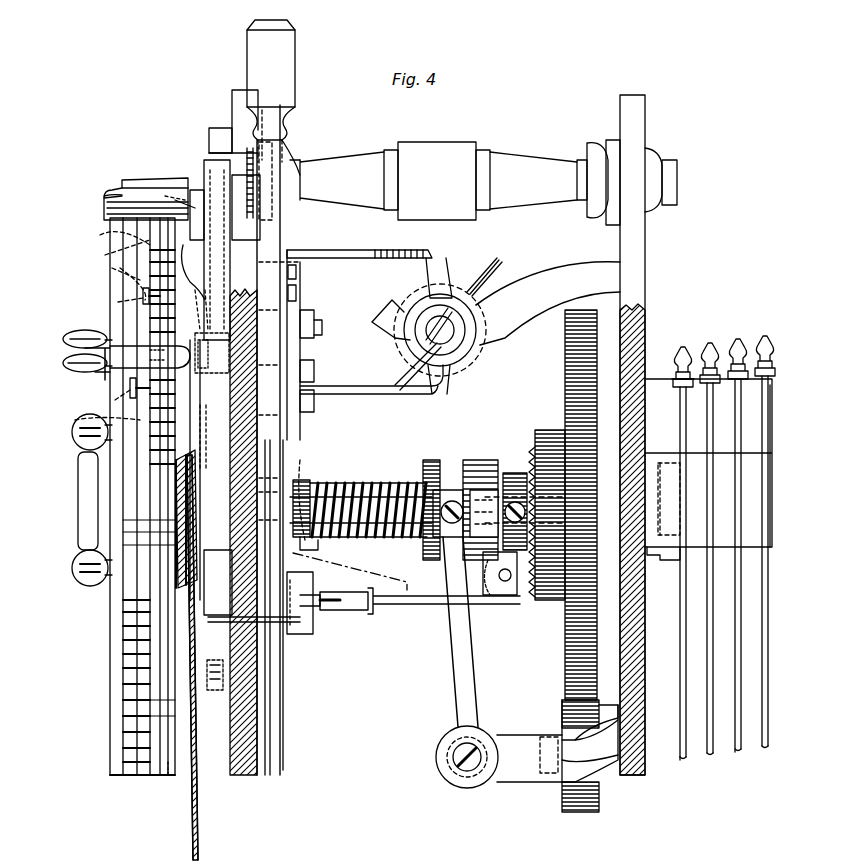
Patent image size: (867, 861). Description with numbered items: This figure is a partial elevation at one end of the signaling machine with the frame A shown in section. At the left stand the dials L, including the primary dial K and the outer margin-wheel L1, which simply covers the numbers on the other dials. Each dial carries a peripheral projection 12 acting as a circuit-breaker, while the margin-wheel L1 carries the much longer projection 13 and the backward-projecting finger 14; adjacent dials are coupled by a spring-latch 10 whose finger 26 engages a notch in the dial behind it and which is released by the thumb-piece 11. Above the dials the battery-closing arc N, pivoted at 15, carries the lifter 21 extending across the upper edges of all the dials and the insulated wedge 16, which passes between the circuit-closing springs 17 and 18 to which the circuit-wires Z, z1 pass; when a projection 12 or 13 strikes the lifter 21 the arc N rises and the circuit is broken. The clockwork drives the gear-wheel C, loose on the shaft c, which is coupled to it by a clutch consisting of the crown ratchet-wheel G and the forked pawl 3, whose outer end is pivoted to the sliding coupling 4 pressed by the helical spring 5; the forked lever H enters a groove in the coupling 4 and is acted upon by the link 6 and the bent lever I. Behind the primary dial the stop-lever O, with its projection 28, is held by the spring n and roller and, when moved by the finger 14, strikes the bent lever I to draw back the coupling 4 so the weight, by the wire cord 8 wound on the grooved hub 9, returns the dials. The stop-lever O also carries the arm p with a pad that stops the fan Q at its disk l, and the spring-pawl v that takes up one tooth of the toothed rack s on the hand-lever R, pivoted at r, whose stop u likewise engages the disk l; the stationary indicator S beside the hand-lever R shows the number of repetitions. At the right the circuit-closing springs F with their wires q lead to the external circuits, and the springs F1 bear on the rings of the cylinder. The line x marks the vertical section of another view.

The margin-wheel L1 is at (110, 735).
The dials L is at (150, 775).
The primary dial K is at (168, 775).
The lifter 21 is at (125, 178).
The projection 28 is at (175, 192).
The battery-closing arc N is at (200, 210).
The thumb-piece 11 is at (65, 345).
The peripheral projection 13 is at (100, 326).
The projection 12 is at (111, 253).
The spring-latch 10 is at (106, 592).
The finger 26 is at (108, 614).
The finger 14 is at (150, 356).
The stop-lever O is at (210, 138).
The insulated wedge 16 is at (205, 175).
The circuit-closing spring 17 is at (196, 270).
The circuit-closing spring 18 is at (240, 288).
The pivot 15 is at (209, 466).
The grooved hub 9 is at (185, 580).
The wire cord 8 is at (198, 657).
The frame A is at (232, 125).
The hand-lever R is at (278, 440).
The circuit-wire Z is at (267, 620).
The circuit-wire z1 is at (283, 742).
The indicator S is at (278, 228).
The section line x is at (303, 450).
The spring-pawl v is at (305, 318).
The toothed rack s is at (310, 381).
The stop u is at (369, 265).
The arm p is at (390, 392).
The disk l is at (435, 324).
The fan Q is at (497, 270).
The pivot r is at (299, 492).
The helical spring 5 is at (375, 483).
The shaft c is at (302, 480).
The sliding coupling 4 is at (478, 460).
The pawl 3 is at (517, 595).
The crown ratchet-wheel G is at (525, 515).
The gear-wheel C is at (565, 358).
The lever H is at (499, 662).
The link 6 is at (406, 586).
The bent lever I is at (305, 630).
The spring n is at (212, 690).
The circuit-closing springs F is at (748, 378).
The spring F1 is at (675, 375).
The wires q is at (760, 745).